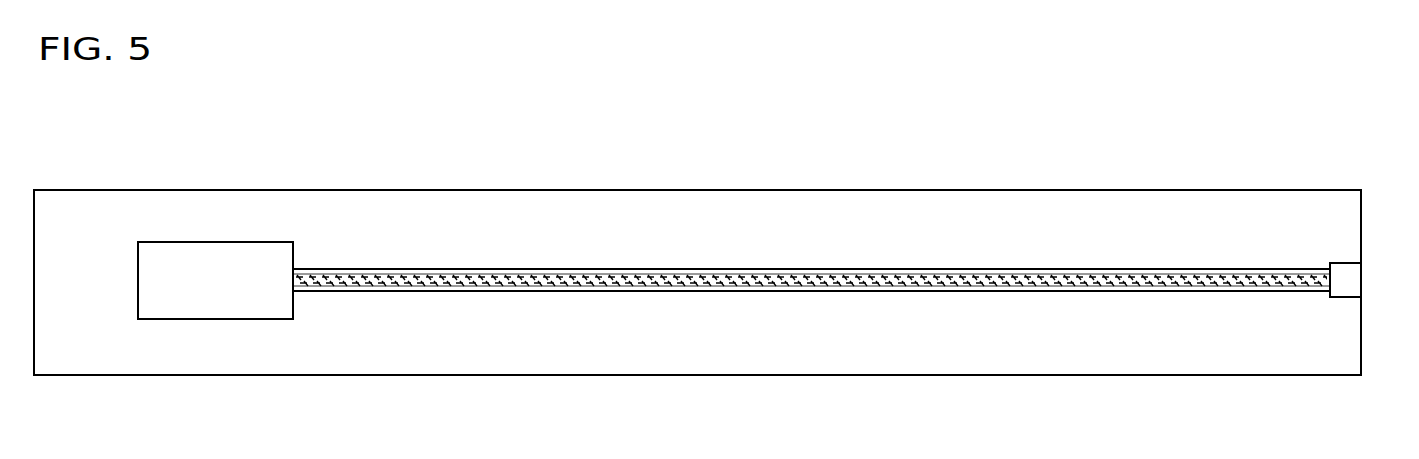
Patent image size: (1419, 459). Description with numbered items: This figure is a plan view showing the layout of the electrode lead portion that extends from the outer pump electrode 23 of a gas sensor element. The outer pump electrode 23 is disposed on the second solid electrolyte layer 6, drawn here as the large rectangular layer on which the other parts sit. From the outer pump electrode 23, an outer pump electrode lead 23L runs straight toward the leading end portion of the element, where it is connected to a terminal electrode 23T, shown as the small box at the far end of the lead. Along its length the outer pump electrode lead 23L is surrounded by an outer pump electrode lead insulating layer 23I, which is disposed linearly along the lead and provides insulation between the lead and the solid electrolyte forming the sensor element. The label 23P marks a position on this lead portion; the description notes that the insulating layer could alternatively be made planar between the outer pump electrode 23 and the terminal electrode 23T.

The second solid electrolyte layer 6 is at (1333, 350).
The outer pump electrode 23 is at (207, 300).
The outer pump electrode lead 23L is at (780, 268).
The outer pump electrode lead insulating layer 23I is at (702, 268).
The heating pattern 23P is at (822, 266).
The terminal electrode 23T is at (1345, 263).